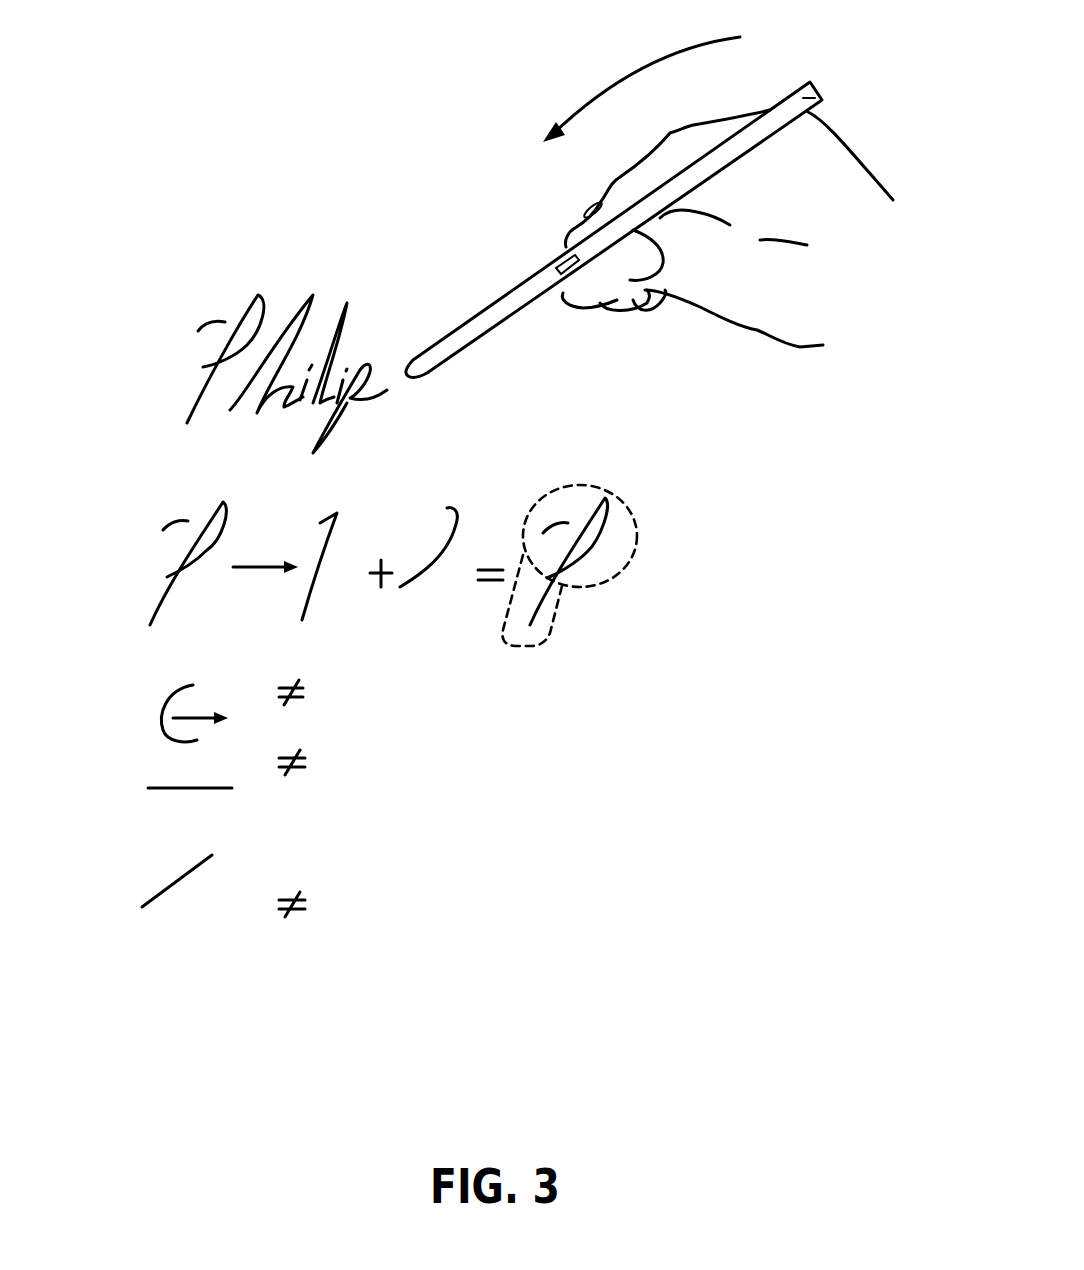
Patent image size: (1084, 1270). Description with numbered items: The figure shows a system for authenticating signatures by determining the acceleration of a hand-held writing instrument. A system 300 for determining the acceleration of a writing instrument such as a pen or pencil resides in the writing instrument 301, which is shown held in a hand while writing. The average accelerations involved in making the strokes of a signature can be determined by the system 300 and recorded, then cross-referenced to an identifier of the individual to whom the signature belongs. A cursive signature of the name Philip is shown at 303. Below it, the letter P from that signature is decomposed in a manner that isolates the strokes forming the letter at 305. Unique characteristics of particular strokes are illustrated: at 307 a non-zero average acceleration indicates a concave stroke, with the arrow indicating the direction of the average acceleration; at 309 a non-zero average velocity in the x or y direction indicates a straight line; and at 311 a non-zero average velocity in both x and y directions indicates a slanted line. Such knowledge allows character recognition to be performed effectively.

The system for determining the acceleration of a writing instrument 300 is at (820, 97).
The writing instrument 301 is at (558, 256).
The cursive signature 303 is at (130, 367).
The decomposition of the letter P 305 is at (130, 567).
The concave stroke with non-zero average acceleration 307 is at (130, 716).
The straight line stroke 309 is at (130, 792).
The slanted line stroke 311 is at (130, 906).